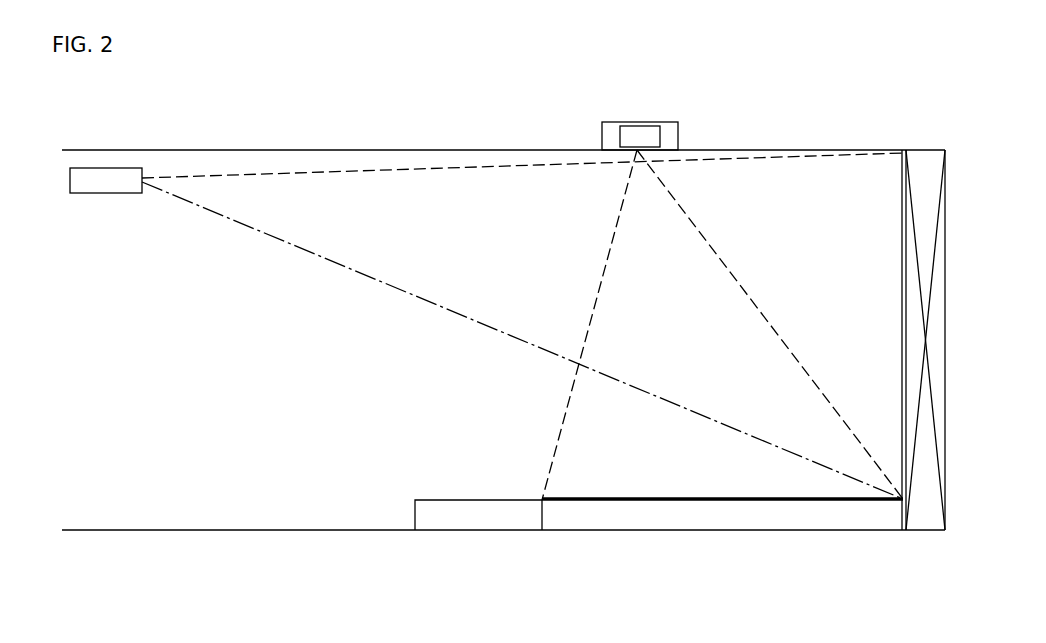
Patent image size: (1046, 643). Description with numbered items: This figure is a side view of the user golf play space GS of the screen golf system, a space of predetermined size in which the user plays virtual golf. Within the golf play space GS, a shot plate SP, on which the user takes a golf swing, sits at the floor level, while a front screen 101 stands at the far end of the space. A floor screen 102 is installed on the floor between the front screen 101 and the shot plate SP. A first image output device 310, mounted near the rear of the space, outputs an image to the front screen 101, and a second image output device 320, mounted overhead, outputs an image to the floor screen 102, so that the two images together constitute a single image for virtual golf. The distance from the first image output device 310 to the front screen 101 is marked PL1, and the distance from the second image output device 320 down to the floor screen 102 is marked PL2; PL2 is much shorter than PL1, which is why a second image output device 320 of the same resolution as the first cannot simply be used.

The front screen 101 is at (902, 188).
The floor screen 102 is at (647, 498).
The first image output device 310 is at (97, 186).
The second image output device 320 is at (646, 135).
The distance from the first image output device to the front screen PL1 is at (900, 128).
The distance from the second image output device to the floor screen PL2 is at (598, 150).
The golf play space GS is at (418, 340).
The shot plate SP is at (468, 500).